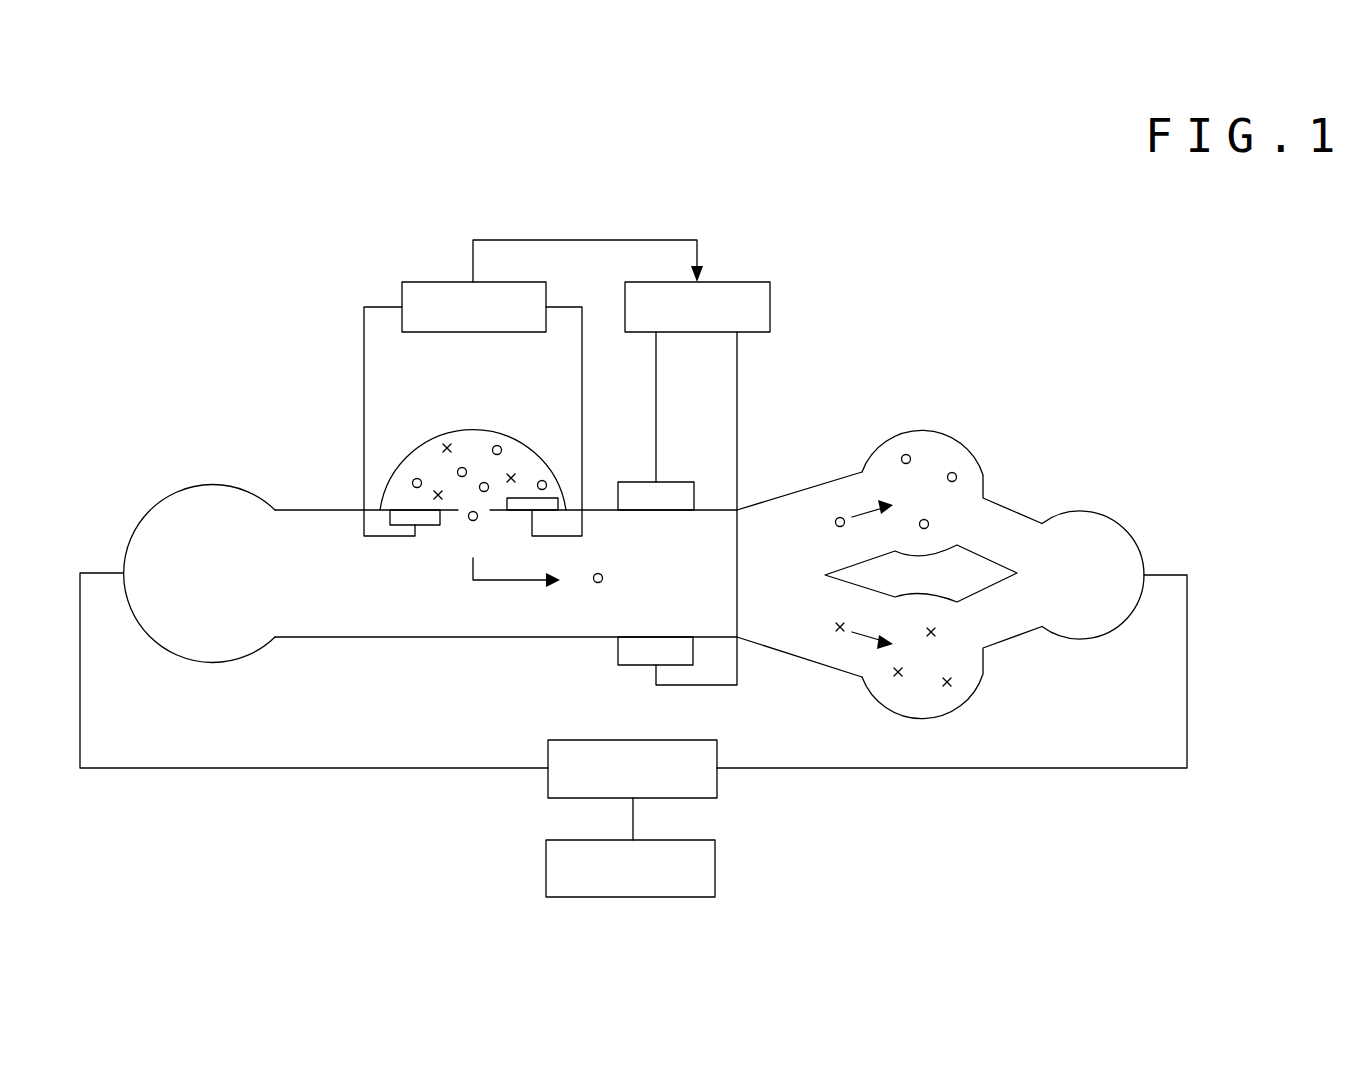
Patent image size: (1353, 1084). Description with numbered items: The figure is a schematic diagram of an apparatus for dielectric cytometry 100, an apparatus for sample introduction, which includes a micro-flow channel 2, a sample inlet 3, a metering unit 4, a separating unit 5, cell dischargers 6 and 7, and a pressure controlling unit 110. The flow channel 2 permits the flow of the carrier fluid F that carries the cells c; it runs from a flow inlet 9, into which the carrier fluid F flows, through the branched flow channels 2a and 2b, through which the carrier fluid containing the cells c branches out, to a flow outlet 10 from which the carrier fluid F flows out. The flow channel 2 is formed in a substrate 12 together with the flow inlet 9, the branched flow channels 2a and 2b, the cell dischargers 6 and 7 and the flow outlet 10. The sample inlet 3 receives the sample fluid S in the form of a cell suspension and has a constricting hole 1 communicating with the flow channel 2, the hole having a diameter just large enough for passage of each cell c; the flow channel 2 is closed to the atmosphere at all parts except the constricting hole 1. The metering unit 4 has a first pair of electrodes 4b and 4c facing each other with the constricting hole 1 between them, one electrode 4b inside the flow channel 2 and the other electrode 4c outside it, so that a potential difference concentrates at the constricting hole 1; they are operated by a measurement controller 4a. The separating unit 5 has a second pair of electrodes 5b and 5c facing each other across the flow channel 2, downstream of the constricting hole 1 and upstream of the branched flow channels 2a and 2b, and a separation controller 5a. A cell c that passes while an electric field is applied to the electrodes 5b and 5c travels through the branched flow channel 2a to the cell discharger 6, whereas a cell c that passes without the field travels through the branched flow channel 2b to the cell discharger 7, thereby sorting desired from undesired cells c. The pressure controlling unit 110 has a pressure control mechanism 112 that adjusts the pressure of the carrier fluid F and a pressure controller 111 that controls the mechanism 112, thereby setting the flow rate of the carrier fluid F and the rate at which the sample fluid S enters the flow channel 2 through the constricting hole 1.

The apparatus for dielectric cytometry 100 is at (593, 158).
The constricting hole 1 is at (482, 512).
The micro-flow channel 2 is at (332, 510).
The branched flow channel 2a is at (830, 478).
The branched flow channel 2b is at (820, 668).
The sample inlet 3 is at (462, 396).
The metering unit 4 is at (386, 230).
The measurement controller 4a is at (428, 281).
The first electrode 4b is at (427, 525).
The first electrode 4c is at (518, 505).
The separating unit 5 is at (786, 230).
The separation controller 5a is at (748, 281).
The second electrode 5b is at (680, 481).
The second electrode 5c is at (635, 666).
The cell discharger 6 is at (918, 430).
The cell discharger 7 is at (922, 719).
The flow inlet 9 is at (213, 485).
The flow outlet 10 is at (1082, 511).
The substrate 12 is at (333, 768).
The pressure controlling unit 110 is at (800, 834).
The pressure controller 111 is at (715, 883).
The pressure control mechanism 112 is at (717, 783).
The sample fluid S is at (492, 424).
The carrier fluid F is at (327, 577).
The cell c is at (417, 478).